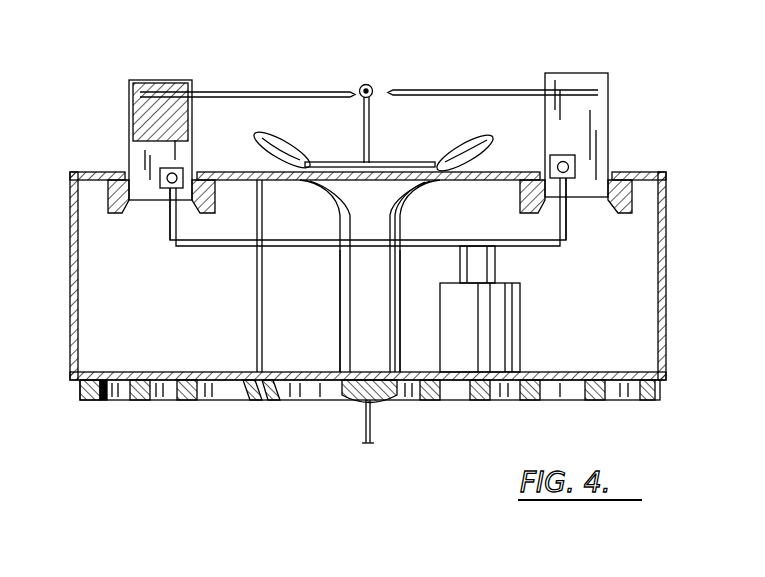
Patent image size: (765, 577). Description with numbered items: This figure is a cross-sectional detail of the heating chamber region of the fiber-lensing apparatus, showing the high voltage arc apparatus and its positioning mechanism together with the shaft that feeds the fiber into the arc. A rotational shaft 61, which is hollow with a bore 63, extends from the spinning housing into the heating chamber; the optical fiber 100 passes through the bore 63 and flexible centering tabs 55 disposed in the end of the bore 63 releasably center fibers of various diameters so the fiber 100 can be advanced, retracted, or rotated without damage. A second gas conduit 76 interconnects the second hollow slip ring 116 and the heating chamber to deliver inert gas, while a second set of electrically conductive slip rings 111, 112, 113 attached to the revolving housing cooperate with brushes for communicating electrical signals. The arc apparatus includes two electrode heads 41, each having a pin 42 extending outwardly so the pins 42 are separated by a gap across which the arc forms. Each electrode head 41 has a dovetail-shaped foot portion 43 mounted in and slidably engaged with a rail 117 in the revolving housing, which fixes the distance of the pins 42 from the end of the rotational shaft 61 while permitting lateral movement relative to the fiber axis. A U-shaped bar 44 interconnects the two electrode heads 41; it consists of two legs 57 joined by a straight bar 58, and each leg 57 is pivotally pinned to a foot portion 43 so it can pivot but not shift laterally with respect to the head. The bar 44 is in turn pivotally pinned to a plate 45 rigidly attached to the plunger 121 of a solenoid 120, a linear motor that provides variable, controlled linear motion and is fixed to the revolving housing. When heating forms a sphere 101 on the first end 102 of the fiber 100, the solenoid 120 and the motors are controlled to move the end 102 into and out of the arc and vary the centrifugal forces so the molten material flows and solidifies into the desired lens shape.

The electrode head 41 is at (130, 138).
The pin 42 is at (264, 92).
The dovetail-shaped foot portion 43 is at (130, 213).
The U-shaped bar 44 is at (213, 246).
The plate 45 is at (470, 240).
The centering tabs 55 is at (290, 140).
The leg 57 is at (165, 230).
The straight bar 58 is at (312, 248).
The rotational shaft 61 is at (360, 335).
The bore 63 is at (395, 405).
The second gas conduit 76 is at (257, 318).
The optical fiber 100 is at (362, 425).
The sphere 101 is at (373, 90).
The first end 102 is at (366, 85).
The slip ring 111 is at (92, 402).
The slip ring 112 is at (137, 402).
The slip ring 113 is at (184, 402).
The second hollow slip ring 116 is at (258, 402).
The rail 117 is at (195, 190).
The solenoid 120 is at (497, 335).
The plunger 121 is at (497, 263).